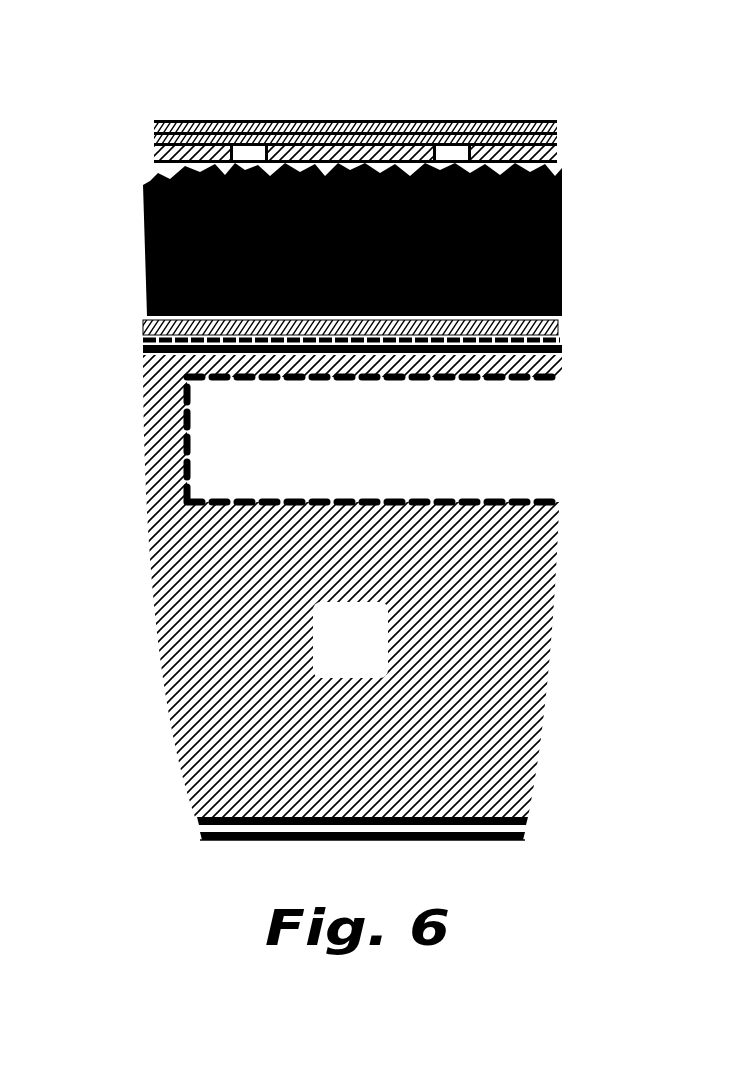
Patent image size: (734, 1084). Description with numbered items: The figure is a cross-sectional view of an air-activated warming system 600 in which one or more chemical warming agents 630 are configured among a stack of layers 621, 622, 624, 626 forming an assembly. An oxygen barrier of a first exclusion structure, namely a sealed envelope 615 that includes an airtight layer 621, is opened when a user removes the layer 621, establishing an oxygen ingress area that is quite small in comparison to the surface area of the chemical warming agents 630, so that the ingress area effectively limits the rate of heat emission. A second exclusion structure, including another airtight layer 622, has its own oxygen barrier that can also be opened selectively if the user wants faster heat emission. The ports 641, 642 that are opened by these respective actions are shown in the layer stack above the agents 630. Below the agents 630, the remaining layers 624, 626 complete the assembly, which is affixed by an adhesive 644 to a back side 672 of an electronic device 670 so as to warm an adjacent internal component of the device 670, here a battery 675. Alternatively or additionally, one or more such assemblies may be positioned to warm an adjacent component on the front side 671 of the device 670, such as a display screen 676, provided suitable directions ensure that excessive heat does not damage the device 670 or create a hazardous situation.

The system 600 is at (98, 184).
The sealed envelope 615 is at (404, 120).
The airtight layer 621 is at (313, 133).
The airtight layer 622 is at (555, 138).
The layer 624 is at (555, 153).
The layer 626 is at (555, 327).
The chemical warming agents 630 is at (380, 273).
The port 641 is at (248, 150).
The port 642 is at (493, 101).
The adhesive 644 is at (556, 340).
The electronic device 670 is at (363, 671).
The front side 671 is at (228, 853).
The back side 672 is at (151, 330).
The battery 675 is at (404, 450).
The display screen 676 is at (523, 828).